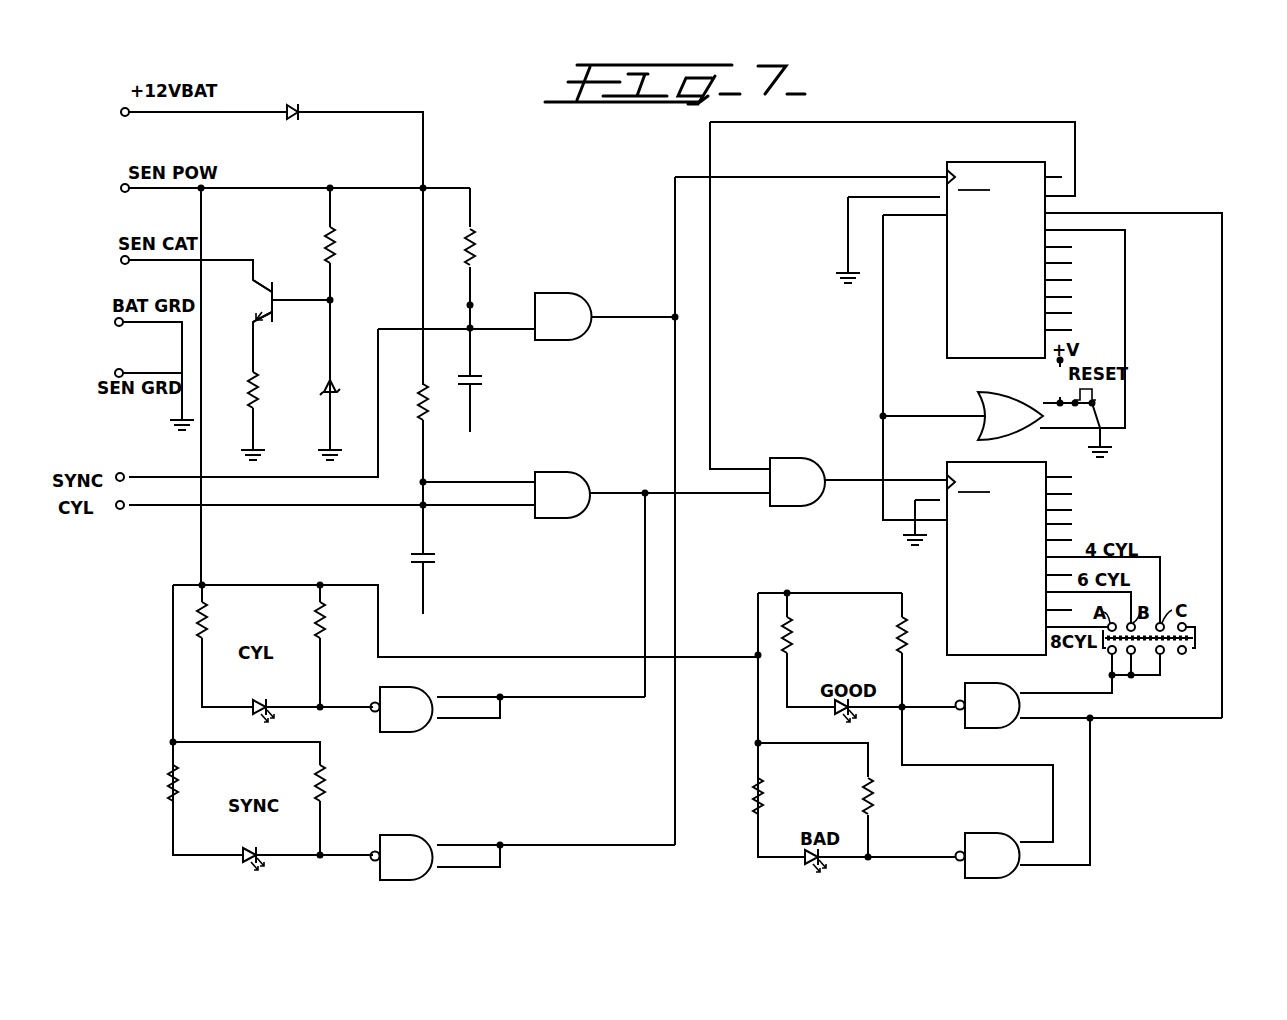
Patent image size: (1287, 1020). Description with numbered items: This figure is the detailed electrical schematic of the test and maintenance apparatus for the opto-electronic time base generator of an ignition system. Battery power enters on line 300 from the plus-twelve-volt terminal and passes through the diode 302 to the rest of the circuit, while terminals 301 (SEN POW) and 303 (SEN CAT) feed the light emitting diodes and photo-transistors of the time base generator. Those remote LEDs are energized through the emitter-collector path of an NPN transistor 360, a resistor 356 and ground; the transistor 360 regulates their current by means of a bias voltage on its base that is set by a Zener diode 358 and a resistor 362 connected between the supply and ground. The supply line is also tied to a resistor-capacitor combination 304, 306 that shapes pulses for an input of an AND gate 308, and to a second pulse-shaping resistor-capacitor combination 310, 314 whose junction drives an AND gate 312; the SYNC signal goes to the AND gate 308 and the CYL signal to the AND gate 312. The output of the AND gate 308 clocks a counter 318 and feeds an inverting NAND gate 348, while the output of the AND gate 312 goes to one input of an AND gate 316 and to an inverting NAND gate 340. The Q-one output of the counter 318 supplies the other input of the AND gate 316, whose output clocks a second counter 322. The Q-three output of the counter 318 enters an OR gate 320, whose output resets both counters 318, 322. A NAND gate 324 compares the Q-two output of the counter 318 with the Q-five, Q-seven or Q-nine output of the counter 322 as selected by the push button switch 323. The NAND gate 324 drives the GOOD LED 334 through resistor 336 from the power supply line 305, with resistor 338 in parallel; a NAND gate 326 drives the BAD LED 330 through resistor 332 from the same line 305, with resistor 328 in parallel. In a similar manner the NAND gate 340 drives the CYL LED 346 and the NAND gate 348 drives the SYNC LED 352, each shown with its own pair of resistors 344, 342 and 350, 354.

The line 300 is at (128, 116).
The terminal 301 is at (121, 190).
The diode 302 is at (292, 106).
The terminal 303 is at (121, 261).
The resistor 304 is at (473, 250).
The power supply line 305 is at (490, 657).
The capacitor 306 is at (473, 383).
The AND gate 308 is at (553, 293).
The resistor 310 is at (420, 410).
The AND gate 312 is at (553, 472).
The capacitor 314 is at (426, 563).
The AND gate 316 is at (787, 458).
The counter 318 is at (955, 288).
The OR gate 320 is at (1020, 392).
The counter 322 is at (940, 560).
The push button switch 323 is at (1196, 638).
The NAND gate 324 is at (985, 683).
The NAND gate 326 is at (1005, 800).
The resistor 328 is at (871, 800).
The BAD LED 330 is at (808, 862).
The resistor 332 is at (755, 800).
The GOOD LED 334 is at (838, 712).
The resistor 336 is at (790, 632).
The resistor 338 is at (905, 640).
The inverting NAND gate 340 is at (400, 687).
The resistor 342 is at (323, 622).
The resistor 344 is at (205, 625).
The CYL LED 346 is at (256, 712).
The inverting NAND gate 348 is at (400, 835).
The resistor 350 is at (323, 780).
The SYNC LED 352 is at (246, 860).
The resistor 354 is at (170, 790).
The resistor 356 is at (250, 392).
The Zener diode 358 is at (326, 388).
The NPN transistor 360 is at (263, 303).
The resistor 362 is at (333, 250).